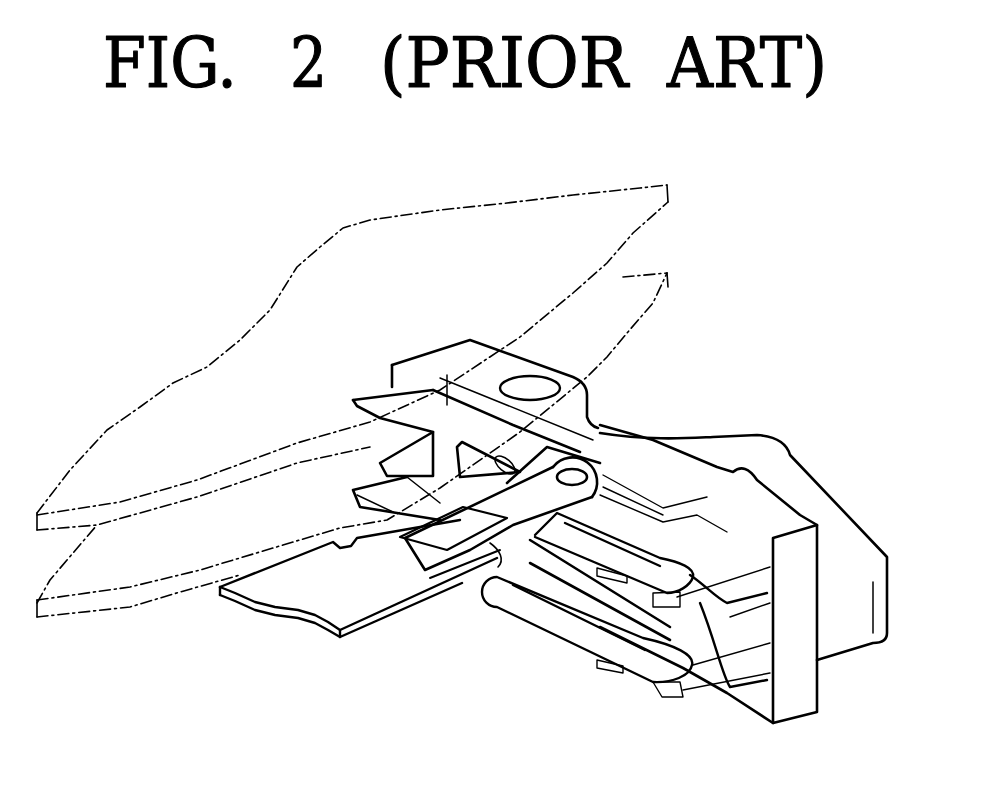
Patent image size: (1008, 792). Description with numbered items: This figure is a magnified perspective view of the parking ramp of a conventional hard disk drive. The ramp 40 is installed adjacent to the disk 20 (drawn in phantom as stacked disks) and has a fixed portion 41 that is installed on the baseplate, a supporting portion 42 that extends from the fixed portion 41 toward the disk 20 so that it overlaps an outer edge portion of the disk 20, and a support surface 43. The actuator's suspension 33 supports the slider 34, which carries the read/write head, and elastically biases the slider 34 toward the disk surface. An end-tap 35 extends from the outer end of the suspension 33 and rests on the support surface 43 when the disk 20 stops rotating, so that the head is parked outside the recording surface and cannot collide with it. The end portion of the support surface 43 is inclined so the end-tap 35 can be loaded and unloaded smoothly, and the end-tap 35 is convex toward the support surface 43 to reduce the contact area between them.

The disk 20 is at (640, 310).
The suspension 33 is at (400, 563).
The slider 34 is at (452, 572).
The end-tap 35 is at (583, 463).
The ramp 40 is at (688, 398).
The fixed portion 41 is at (717, 480).
The supporting portion 42 is at (350, 403).
The support surface 43 is at (447, 405).